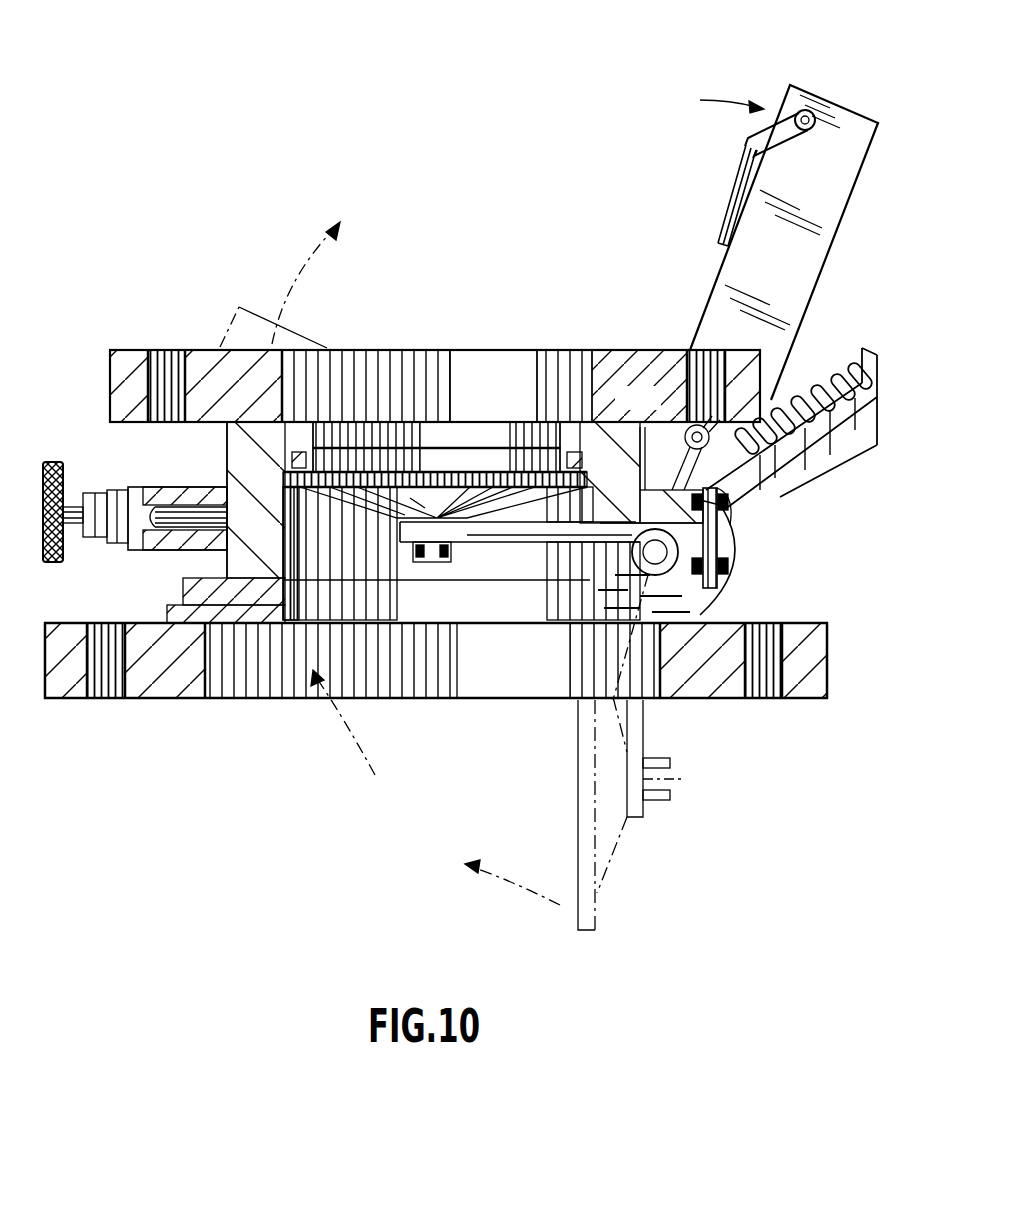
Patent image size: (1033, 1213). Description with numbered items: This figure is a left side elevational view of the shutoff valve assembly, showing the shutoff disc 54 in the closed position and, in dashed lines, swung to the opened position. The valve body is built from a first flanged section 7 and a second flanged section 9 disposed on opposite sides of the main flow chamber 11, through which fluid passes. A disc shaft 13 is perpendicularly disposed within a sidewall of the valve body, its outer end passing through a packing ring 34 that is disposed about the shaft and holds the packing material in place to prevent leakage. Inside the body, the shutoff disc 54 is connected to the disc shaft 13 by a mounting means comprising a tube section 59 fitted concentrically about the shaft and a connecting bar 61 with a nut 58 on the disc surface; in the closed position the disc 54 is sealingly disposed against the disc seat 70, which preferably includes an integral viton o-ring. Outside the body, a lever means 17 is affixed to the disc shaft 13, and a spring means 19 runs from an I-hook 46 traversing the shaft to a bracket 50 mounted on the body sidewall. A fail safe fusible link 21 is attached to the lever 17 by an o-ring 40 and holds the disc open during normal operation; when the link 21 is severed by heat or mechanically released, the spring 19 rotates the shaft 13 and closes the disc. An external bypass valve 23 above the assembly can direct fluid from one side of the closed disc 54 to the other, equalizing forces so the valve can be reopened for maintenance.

The first flanged section 7 is at (612, 348).
The second flanged section 9 is at (70, 620).
The main flow chamber 11 is at (227, 476).
The disc shaft 13 is at (634, 556).
The lever means 17 is at (697, 329).
The spring means 19 is at (830, 380).
The fail safe fusible link 21 is at (720, 227).
The external bypass valve 23 is at (173, 548).
The packing ring 34 is at (727, 583).
The o-ring 40 is at (790, 148).
The I-hook 46 is at (639, 386).
The bracket 50 is at (868, 350).
The shutoff disc 54 is at (472, 478).
The nut 58 is at (590, 608).
The tube section 59 is at (722, 546).
The connecting bar 61 is at (513, 527).
The disc seat 70 is at (292, 458).